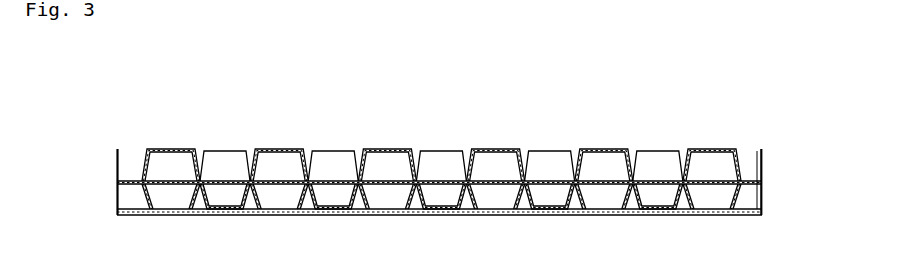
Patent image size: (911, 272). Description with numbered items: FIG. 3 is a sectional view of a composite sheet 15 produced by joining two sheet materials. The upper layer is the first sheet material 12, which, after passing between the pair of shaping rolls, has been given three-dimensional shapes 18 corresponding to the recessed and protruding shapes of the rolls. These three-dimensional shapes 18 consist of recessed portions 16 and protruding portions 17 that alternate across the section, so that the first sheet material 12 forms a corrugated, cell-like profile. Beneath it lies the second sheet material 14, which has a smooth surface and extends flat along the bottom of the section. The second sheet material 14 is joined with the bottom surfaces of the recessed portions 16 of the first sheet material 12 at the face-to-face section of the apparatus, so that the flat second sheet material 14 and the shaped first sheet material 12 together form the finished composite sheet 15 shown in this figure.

The first sheet material 12 is at (168, 148).
The second sheet material 14 is at (162, 215).
The composite sheet 15 is at (665, 138).
The recessed portions 16 is at (351, 190).
The protruding portions 17 is at (420, 152).
The three-dimensional shapes 18 is at (396, 99).